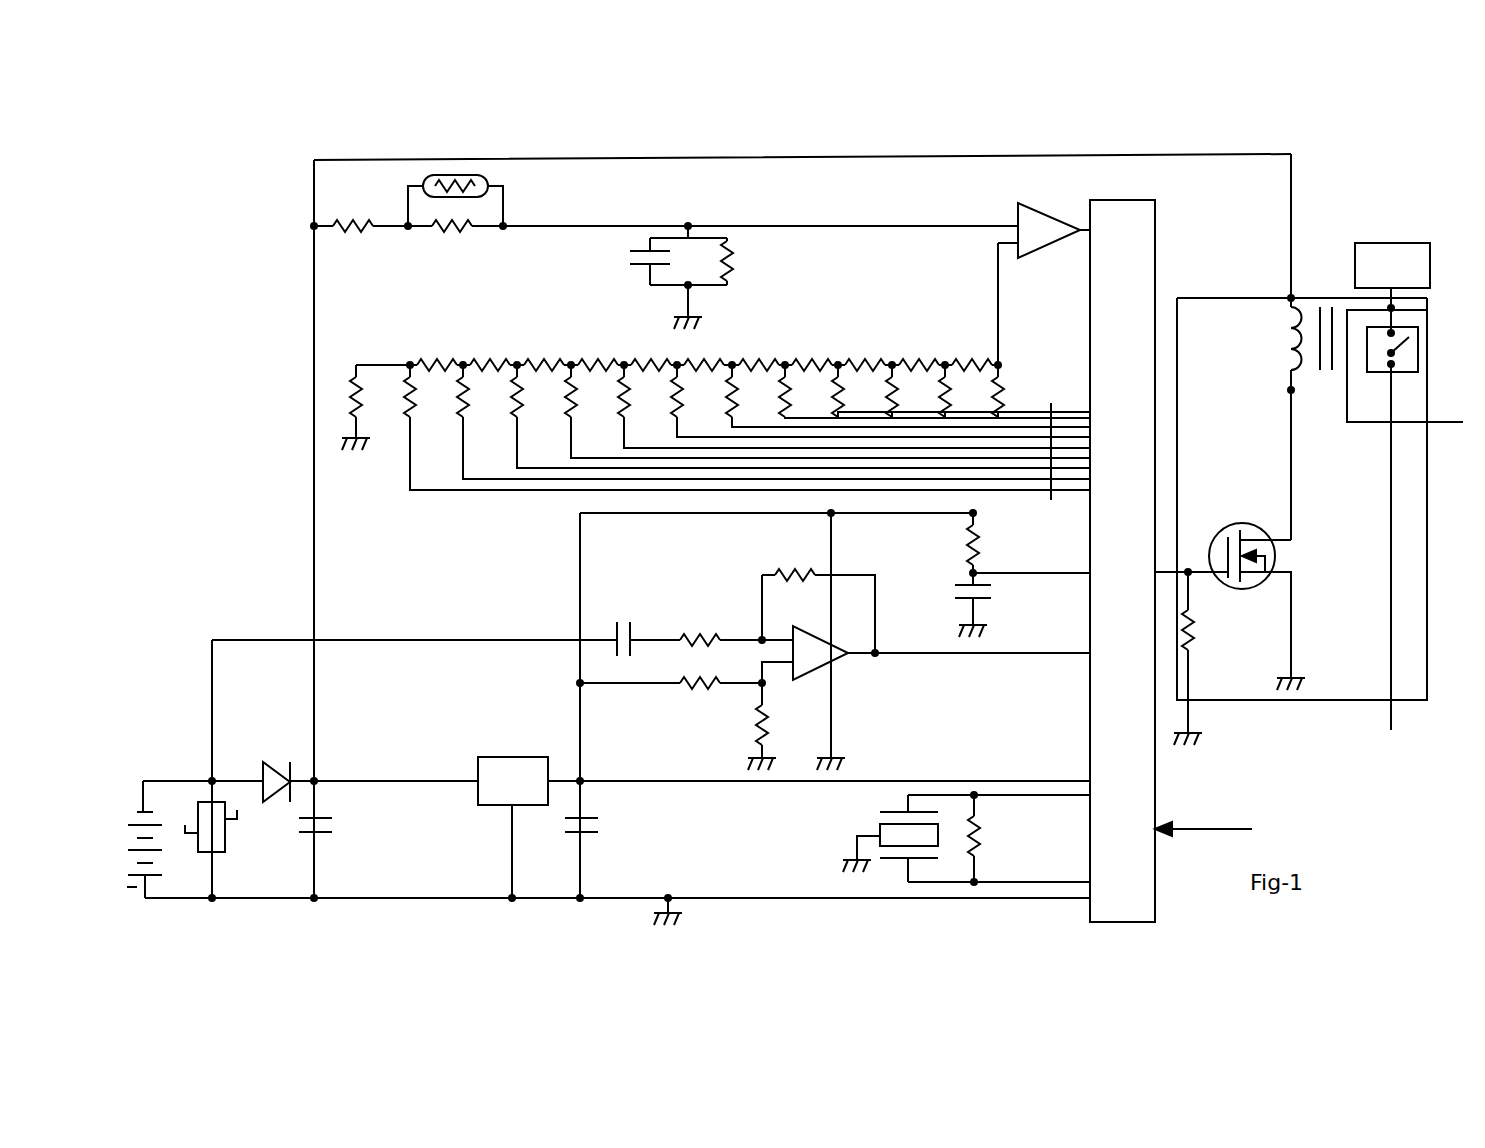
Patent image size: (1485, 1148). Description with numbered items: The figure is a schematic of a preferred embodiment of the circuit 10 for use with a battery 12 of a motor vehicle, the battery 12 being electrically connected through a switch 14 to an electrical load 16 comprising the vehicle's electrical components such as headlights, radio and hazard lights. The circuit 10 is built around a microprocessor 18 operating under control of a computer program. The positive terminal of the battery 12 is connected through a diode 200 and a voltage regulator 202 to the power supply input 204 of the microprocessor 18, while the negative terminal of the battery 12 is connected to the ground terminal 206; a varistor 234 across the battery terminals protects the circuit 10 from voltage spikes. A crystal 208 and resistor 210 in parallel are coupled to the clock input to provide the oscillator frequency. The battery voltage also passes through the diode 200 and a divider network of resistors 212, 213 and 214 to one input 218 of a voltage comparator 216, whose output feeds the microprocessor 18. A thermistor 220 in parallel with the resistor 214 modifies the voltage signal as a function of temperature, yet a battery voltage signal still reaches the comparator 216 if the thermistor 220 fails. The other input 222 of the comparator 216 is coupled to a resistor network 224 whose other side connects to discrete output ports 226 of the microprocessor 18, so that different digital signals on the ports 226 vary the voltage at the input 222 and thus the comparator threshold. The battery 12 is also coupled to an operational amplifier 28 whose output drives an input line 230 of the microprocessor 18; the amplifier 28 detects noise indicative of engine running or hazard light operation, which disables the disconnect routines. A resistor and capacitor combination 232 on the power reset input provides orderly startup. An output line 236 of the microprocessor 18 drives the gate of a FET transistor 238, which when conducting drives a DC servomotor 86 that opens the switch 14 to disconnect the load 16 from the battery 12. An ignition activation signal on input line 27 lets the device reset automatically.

The circuit 10 is at (250, 208).
The battery 12 is at (174, 803).
The switch 14 is at (1463, 424).
The electrical load 16 is at (1393, 243).
The microprocessor 18 is at (1155, 278).
The input line 27 is at (1228, 829).
The operational amplifier 28 is at (848, 657).
The DC servomotor 86 is at (1293, 355).
The diode 200 is at (262, 764).
The voltage regulator 202 is at (529, 757).
The power supply input 204 is at (1052, 779).
The ground terminal 206 is at (1071, 900).
The crystal 208 is at (880, 826).
The resistor 210 is at (985, 852).
The resistor 212 is at (352, 234).
The resistor 213 is at (733, 263).
The resistor 214 is at (473, 233).
The voltage comparator 216 is at (1040, 257).
The input 218 is at (996, 222).
The thermistor 220 is at (428, 175).
The input 222 is at (997, 298).
The resistor network 224 is at (766, 338).
The discrete output ports 226 is at (1052, 393).
The input line 230 is at (1060, 655).
The resistor and capacitor combination 232 is at (950, 572).
The varistor 234 is at (213, 853).
The output line 236 is at (1175, 572).
The FET transistor 238 is at (1255, 524).